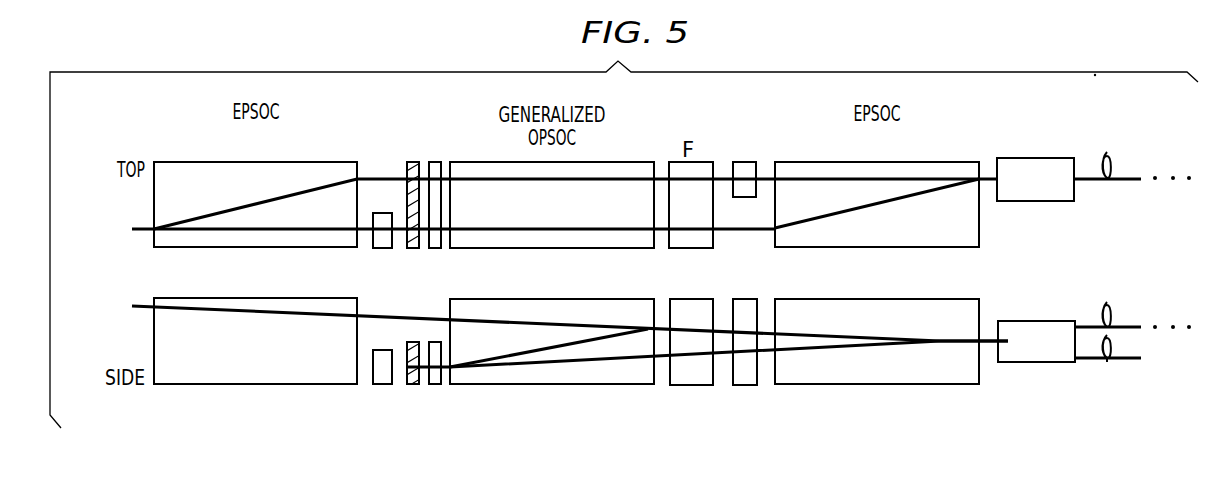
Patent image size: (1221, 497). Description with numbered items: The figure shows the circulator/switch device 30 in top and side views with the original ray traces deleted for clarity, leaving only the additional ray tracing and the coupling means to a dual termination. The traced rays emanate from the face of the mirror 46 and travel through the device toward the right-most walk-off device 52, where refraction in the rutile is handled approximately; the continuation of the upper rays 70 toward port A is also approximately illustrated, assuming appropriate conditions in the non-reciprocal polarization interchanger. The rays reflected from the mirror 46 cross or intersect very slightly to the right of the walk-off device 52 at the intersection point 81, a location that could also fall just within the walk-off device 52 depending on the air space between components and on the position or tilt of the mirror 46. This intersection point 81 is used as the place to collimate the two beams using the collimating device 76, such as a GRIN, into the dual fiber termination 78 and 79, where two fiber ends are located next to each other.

The circulator/switch device 30 is at (603, 397).
The mirror 46 is at (413, 162).
The right-most walk-off device 52 is at (940, 163).
The upper rays 70 is at (210, 298).
The collimating device 76 is at (1033, 158).
The dual fiber termination 78 is at (1107, 152).
The dual fiber termination 79 is at (1107, 360).
The intersection point 81 is at (985, 337).